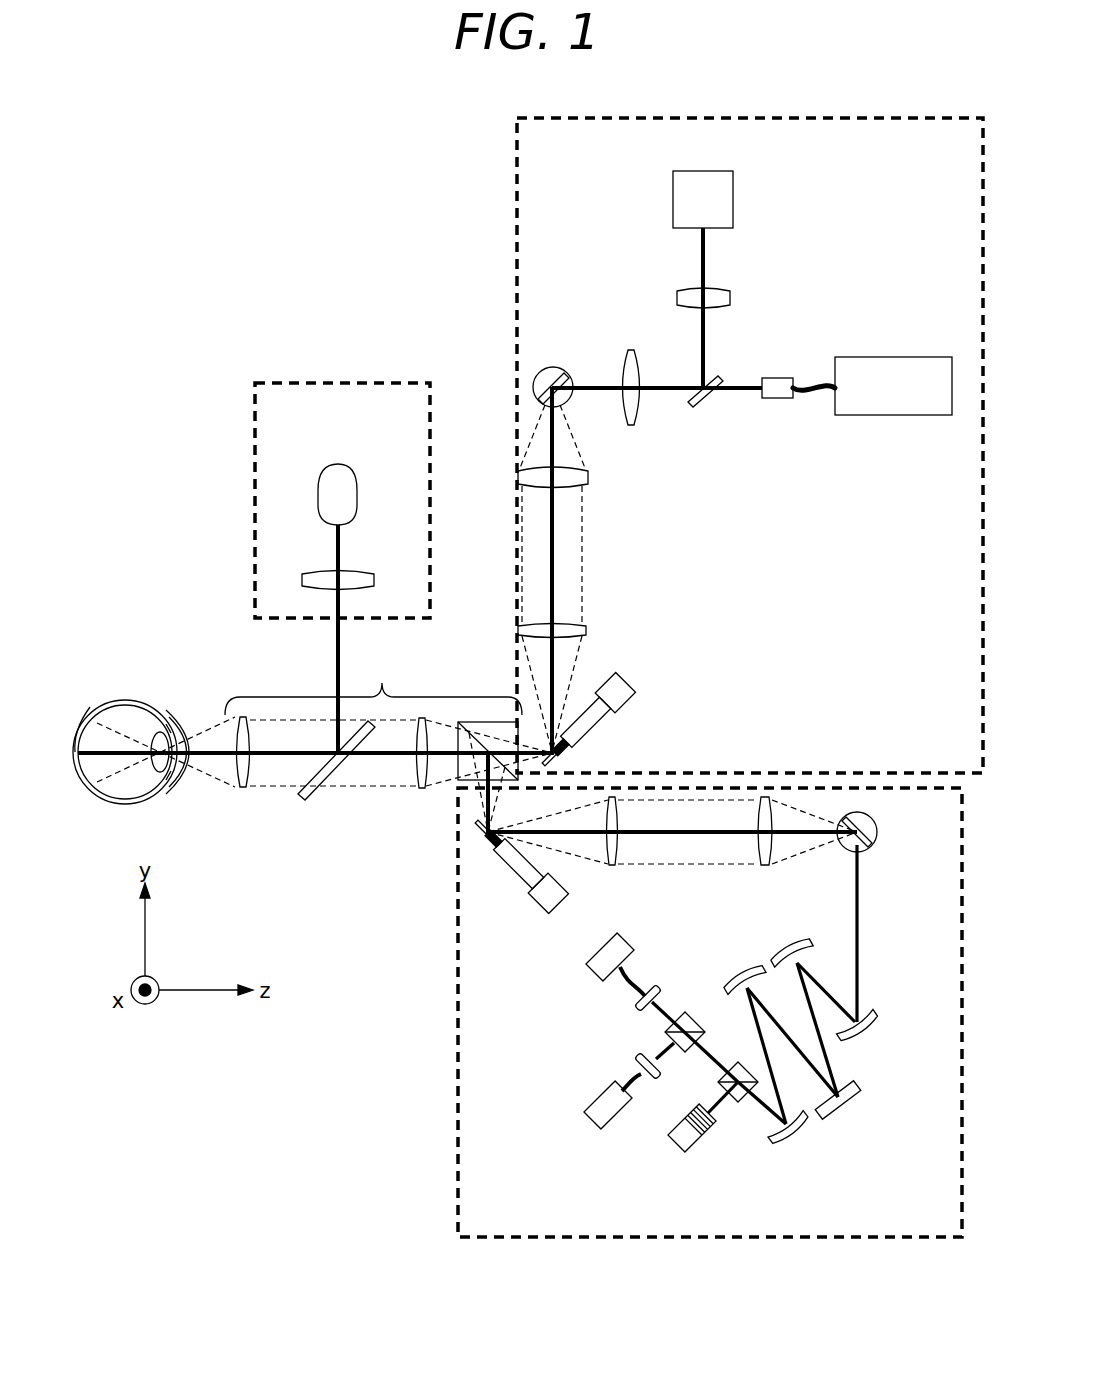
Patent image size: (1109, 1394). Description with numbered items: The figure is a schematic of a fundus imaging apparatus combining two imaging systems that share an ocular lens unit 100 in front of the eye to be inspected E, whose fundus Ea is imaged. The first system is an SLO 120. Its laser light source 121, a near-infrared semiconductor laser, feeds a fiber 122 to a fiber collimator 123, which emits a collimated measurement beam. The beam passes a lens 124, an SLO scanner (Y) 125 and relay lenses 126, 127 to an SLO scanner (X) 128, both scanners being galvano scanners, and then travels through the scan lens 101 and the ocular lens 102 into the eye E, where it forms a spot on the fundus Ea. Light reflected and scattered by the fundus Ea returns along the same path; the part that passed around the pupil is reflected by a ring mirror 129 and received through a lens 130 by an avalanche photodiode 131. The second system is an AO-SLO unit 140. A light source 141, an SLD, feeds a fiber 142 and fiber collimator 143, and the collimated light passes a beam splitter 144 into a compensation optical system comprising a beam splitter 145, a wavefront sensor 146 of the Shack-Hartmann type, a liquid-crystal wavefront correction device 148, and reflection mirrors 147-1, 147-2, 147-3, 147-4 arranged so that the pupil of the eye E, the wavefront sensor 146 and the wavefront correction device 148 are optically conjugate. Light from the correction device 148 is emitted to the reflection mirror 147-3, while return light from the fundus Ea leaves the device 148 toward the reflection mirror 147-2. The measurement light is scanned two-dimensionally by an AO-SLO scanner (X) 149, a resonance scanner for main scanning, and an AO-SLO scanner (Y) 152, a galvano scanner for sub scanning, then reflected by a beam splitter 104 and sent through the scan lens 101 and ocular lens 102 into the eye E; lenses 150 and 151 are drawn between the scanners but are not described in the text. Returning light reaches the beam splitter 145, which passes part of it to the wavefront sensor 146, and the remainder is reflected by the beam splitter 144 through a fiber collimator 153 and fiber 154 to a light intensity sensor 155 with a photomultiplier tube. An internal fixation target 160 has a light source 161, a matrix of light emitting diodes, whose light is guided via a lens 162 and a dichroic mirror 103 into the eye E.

The eye to be inspected E is at (160, 705).
The fundus Ea is at (78, 735).
The ocular lens unit 100 is at (373, 683).
The scan lens 101 is at (418, 770).
The ocular lens 102 is at (243, 790).
The dichroic mirror 103 is at (305, 800).
The beam splitter 104 is at (458, 768).
The SLO 120 is at (517, 190).
The laser light source 121 is at (892, 415).
The fiber 122 is at (810, 381).
The fiber collimator 123 is at (777, 398).
The lens 124 is at (626, 352).
The SLO scanner (Y) 125 is at (548, 370).
The relay lens 126 is at (590, 478).
The relay lens 127 is at (590, 630).
The SLO scanner (X) 128 is at (606, 716).
The ring mirror 129 is at (696, 405).
The lens 130 is at (716, 293).
The avalanche photodiode 131 is at (730, 202).
The AO-SLO unit 140 is at (458, 978).
The light source 141 is at (595, 965).
The fiber 142 is at (625, 979).
The fiber collimator 143 is at (638, 1003).
The beam splitter 144 is at (688, 1046).
The beam splitter 145 is at (736, 1098).
The wavefront sensor 146 is at (680, 1142).
The reflection mirror 147-1 is at (795, 1140).
The reflection mirror 147-2 is at (737, 970).
The reflection mirror 147-3 is at (790, 946).
The reflection mirror 147-4 is at (870, 1032).
The wavefront correction device 148 is at (845, 1108).
The AO-SLO scanner (X) 149 is at (880, 832).
The lens 150 is at (768, 867).
The lens 151 is at (614, 867).
The AO-SLO scanner (Y) 152 is at (530, 893).
The fiber collimator 153 is at (637, 1061).
The fiber 154 is at (638, 1090).
The light intensity sensor 155 is at (590, 1116).
The internal fixation target 160 is at (340, 383).
The light source 161 is at (337, 464).
The lens 162 is at (355, 575).